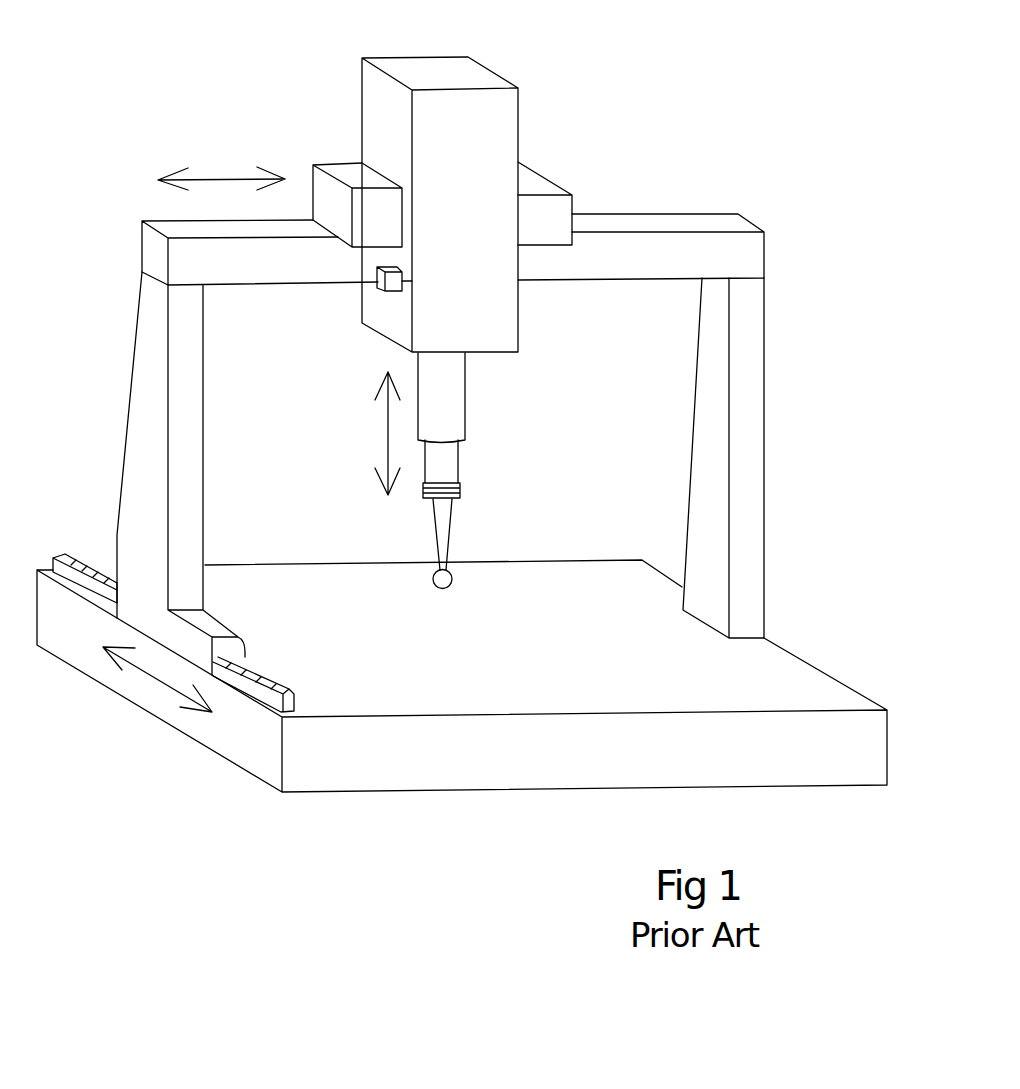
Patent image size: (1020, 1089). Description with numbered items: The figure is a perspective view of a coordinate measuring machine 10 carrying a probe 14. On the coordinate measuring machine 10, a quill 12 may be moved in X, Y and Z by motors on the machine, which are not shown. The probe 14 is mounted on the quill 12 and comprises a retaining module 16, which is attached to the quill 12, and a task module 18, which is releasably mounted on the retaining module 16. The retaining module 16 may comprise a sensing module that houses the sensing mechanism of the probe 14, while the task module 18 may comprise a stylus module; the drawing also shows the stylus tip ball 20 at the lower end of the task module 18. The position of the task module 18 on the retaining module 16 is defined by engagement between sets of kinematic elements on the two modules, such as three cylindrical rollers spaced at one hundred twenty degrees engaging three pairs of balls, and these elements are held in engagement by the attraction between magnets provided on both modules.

The coordinate measuring machine 10 is at (462, 401).
The quill 12 is at (465, 395).
The probe 14 is at (451, 524).
The retaining module 16 is at (478, 440).
The task module 18 is at (478, 588).
The stylus tip ball 20 is at (440, 535).